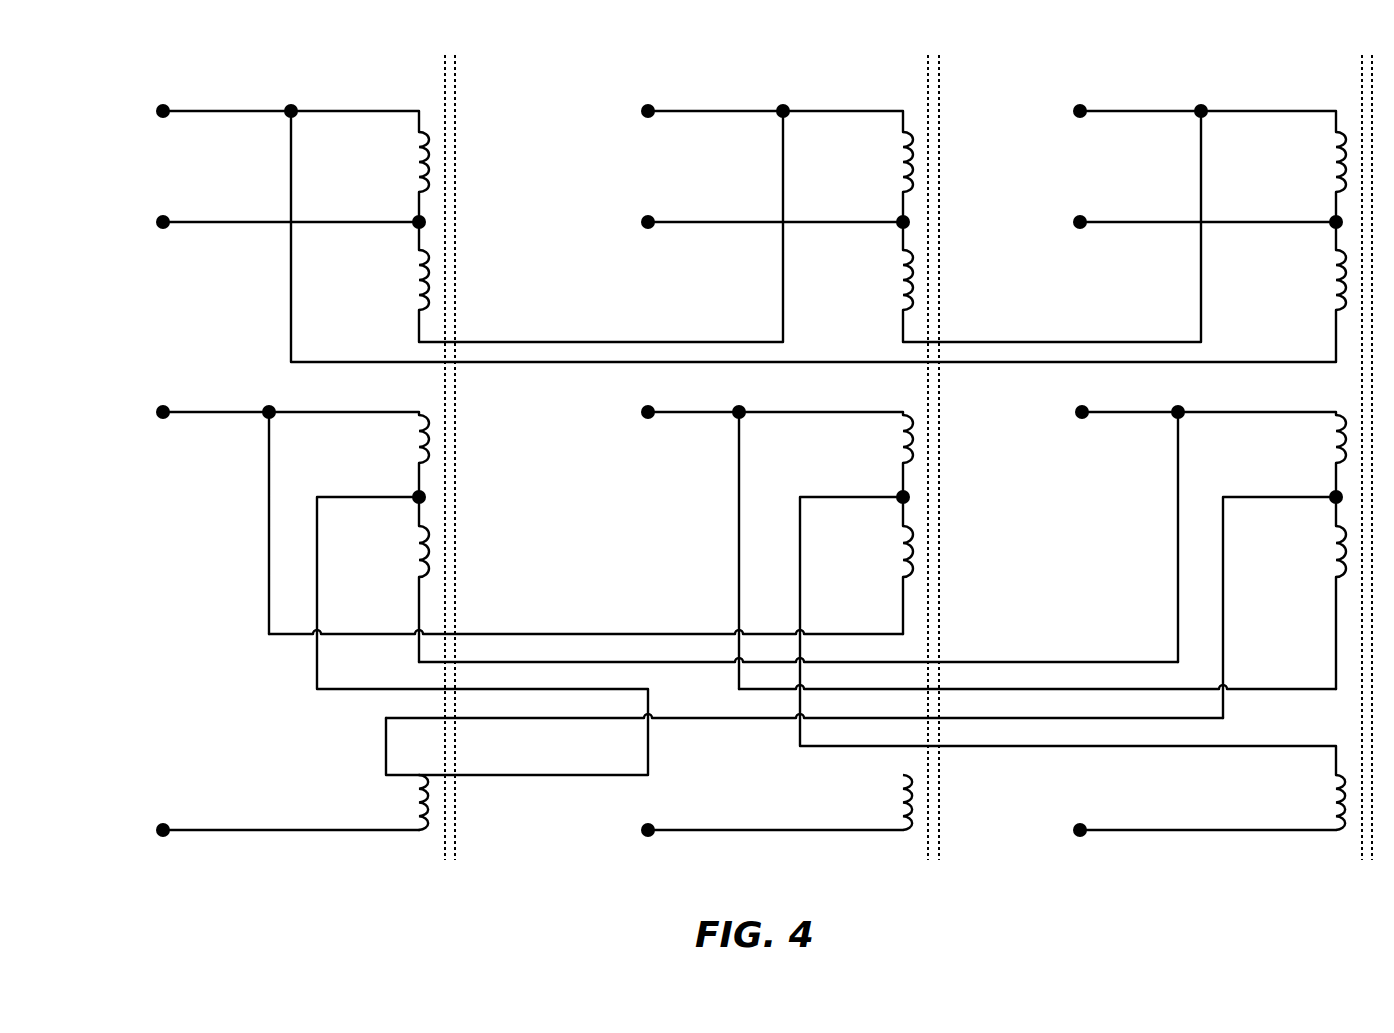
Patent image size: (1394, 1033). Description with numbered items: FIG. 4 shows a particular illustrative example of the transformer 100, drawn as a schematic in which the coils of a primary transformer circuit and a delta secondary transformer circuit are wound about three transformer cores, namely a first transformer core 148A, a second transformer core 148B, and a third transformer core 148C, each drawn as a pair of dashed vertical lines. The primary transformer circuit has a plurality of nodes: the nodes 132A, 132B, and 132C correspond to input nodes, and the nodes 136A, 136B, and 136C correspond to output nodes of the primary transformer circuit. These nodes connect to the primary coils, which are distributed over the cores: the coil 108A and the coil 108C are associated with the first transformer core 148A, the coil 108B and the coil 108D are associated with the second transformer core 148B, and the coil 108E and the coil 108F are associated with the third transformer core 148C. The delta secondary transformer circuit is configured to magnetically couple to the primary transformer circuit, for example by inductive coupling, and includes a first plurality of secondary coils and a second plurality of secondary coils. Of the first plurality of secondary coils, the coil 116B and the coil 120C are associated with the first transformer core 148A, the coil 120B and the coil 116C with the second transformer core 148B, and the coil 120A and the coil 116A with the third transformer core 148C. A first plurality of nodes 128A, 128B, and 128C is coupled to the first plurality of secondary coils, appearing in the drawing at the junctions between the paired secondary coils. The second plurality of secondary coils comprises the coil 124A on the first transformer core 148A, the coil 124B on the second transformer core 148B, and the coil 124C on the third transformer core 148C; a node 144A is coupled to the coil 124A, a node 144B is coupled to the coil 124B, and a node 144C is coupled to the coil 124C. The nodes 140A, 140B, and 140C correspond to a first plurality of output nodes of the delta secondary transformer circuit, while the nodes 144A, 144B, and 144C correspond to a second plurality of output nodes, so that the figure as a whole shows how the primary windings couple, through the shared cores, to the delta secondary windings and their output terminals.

The transformer 100 is at (176, 52).
The first transformer core 148A is at (1360, 87).
The second transformer core 148B is at (443, 87).
The third transformer core 148C is at (927, 87).
The node 132A is at (166, 116).
The node 132B is at (1083, 116).
The node 132C is at (651, 116).
The node 136A is at (1083, 217).
The node 136B is at (166, 217).
The node 136C is at (651, 217).
The coil 108A is at (1339, 297).
The coil 108B is at (422, 180).
The coil 108C is at (1339, 180).
The coil 108D is at (422, 297).
The coil 108E is at (906, 297).
The coil 108F is at (906, 180).
The node 140A is at (166, 407).
The node 140B is at (645, 417).
The node 140C is at (1085, 407).
The coil 120A is at (906, 448).
The coil 120B is at (422, 448).
The coil 120C is at (1339, 448).
The node 128A is at (900, 492).
The node 128B is at (1333, 492).
The node 128C is at (416, 492).
The coil 116A is at (906, 560).
The coil 116B is at (1339, 560).
The coil 116C is at (422, 560).
The node 144A is at (1082, 836).
The node 144B is at (166, 836).
The node 144C is at (650, 836).
The coil 124A is at (1341, 834).
The coil 124B is at (428, 834).
The coil 124C is at (908, 834).